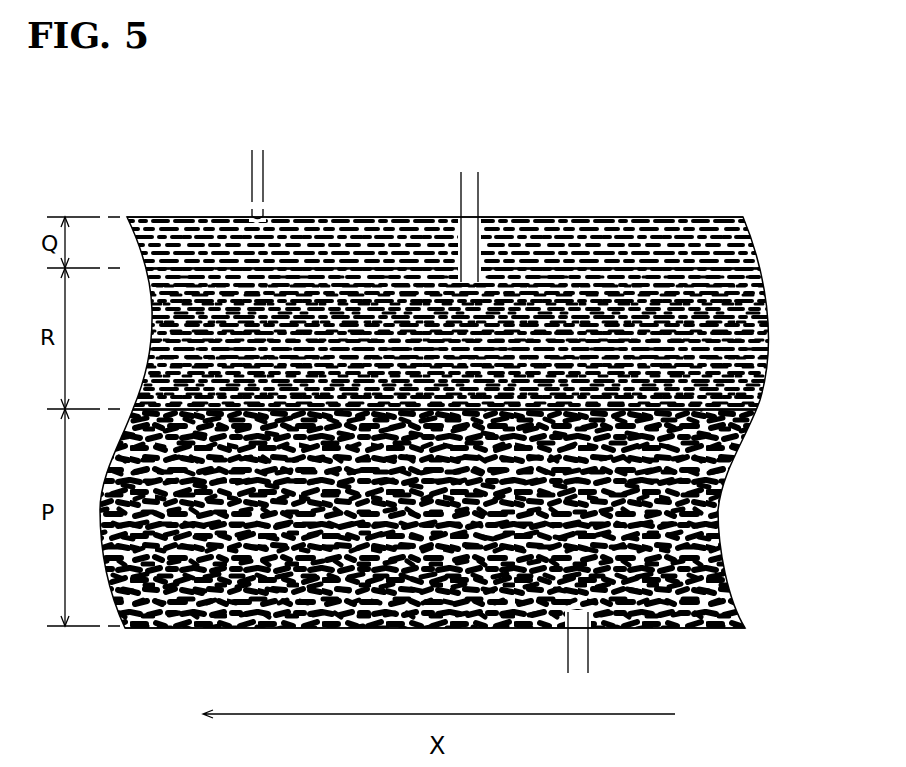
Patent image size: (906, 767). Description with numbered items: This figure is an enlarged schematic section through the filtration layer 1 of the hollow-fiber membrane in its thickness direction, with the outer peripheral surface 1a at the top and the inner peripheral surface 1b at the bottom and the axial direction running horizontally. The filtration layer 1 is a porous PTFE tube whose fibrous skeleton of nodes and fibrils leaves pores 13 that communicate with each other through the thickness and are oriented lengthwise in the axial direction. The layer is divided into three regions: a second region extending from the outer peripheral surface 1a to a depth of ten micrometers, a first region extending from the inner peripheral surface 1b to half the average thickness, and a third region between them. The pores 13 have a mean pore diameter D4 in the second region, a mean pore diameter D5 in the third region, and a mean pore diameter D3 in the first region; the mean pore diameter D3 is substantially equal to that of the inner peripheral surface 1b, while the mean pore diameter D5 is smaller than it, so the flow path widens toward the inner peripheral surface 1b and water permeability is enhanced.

The filtration layer 1 is at (726, 173).
The outer peripheral surface 1a is at (366, 216).
The inner peripheral surface 1b is at (190, 628).
The pores 13 is at (265, 216).
The mean pore diameter of the first region D3 is at (596, 665).
The mean pore diameter of the second region D4 is at (271, 167).
The mean pore diameter of the third region D5 is at (486, 191).